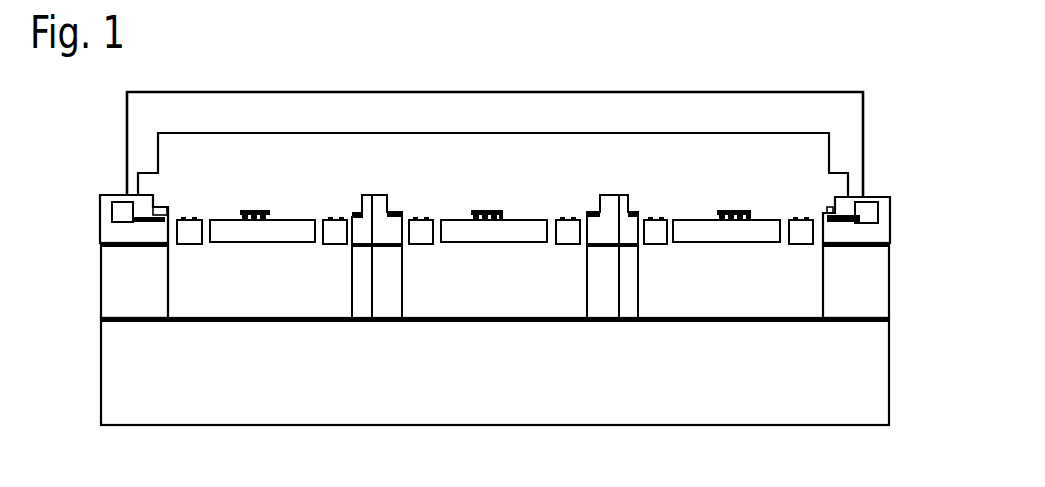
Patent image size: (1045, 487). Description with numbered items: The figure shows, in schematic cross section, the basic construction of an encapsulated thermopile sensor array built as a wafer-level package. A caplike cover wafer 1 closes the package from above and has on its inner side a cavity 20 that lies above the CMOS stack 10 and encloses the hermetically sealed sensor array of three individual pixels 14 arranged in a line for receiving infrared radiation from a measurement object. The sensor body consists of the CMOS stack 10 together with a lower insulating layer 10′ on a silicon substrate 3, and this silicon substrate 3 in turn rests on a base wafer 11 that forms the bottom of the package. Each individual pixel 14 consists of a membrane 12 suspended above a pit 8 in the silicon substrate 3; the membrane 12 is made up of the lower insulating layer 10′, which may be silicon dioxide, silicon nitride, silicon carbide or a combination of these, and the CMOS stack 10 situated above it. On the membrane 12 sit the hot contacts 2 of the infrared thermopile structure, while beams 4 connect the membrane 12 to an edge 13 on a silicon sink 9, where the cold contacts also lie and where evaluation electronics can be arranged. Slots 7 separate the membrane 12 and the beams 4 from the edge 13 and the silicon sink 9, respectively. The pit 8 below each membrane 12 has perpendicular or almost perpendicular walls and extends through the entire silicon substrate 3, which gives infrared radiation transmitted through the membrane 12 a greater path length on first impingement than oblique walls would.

The cover wafer 1 is at (236, 126).
The hot contacts 2 is at (250, 208).
The silicon substrate 3 is at (94, 243).
The beams 4 is at (190, 244).
The slots 7 is at (206, 216).
The pit 8 is at (256, 314).
The silicon sink 9 is at (867, 299).
The CMOS stack 10 is at (897, 197).
The lower insulating layer 10′ is at (108, 231).
The base wafer 11 is at (508, 396).
The membrane 12 is at (250, 238).
The edge 13 is at (108, 205).
The individual pixels 14 is at (372, 323).
The cavity 20 is at (503, 176).